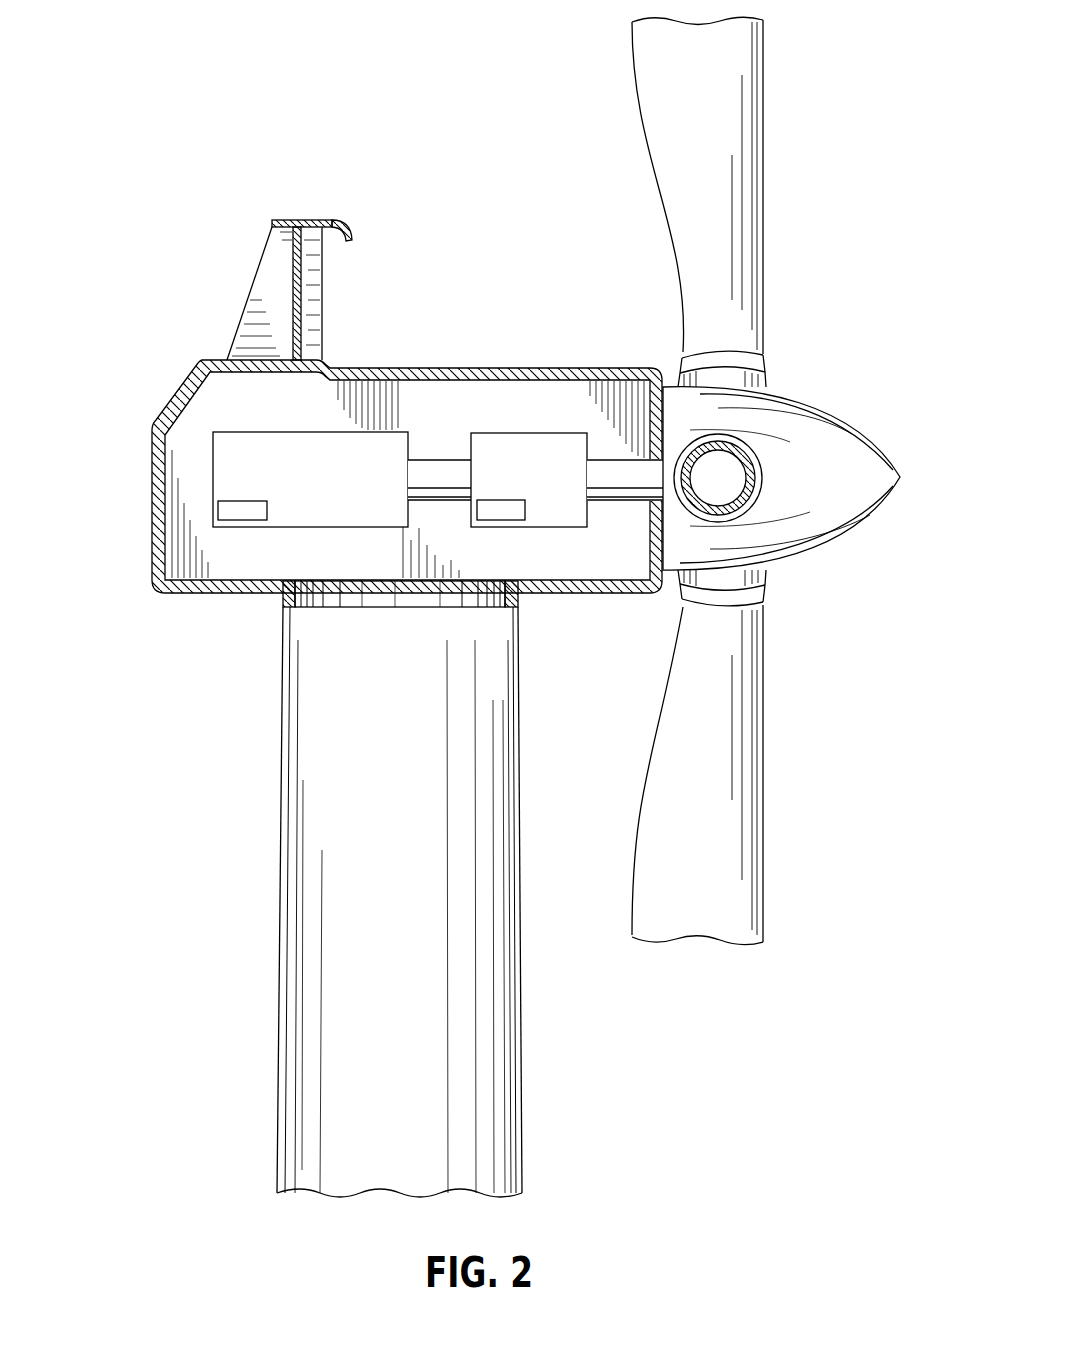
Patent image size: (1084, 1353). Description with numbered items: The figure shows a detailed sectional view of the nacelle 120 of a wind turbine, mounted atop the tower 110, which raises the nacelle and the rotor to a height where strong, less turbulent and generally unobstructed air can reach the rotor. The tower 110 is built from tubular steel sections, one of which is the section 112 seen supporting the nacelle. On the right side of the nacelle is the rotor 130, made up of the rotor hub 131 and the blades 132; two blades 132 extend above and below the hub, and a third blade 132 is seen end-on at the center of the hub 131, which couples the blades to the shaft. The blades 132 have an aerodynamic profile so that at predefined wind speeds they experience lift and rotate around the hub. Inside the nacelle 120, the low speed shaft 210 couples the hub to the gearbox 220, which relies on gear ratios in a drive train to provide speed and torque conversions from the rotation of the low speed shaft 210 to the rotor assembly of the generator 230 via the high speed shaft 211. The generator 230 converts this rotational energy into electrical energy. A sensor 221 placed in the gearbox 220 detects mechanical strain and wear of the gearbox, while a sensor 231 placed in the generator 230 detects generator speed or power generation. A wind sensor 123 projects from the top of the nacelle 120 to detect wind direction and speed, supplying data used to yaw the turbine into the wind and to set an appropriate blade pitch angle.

The tower 110 is at (368, 889).
The tubular steel section 112 is at (280, 808).
The nacelle 120 is at (127, 441).
The wind sensor 123 is at (287, 218).
The rotor 130 is at (787, 480).
The rotor hub 131 is at (828, 415).
The blade 132 is at (763, 193).
The low speed shaft 210 is at (617, 501).
The high speed shaft 211 is at (433, 460).
The gearbox 220 is at (529, 479).
The sensor 221 is at (500, 521).
The generator 230 is at (310, 479).
The sensor 231 is at (237, 521).